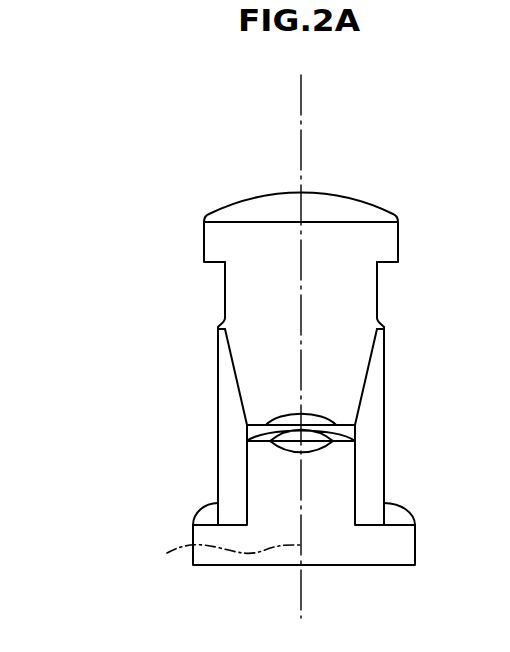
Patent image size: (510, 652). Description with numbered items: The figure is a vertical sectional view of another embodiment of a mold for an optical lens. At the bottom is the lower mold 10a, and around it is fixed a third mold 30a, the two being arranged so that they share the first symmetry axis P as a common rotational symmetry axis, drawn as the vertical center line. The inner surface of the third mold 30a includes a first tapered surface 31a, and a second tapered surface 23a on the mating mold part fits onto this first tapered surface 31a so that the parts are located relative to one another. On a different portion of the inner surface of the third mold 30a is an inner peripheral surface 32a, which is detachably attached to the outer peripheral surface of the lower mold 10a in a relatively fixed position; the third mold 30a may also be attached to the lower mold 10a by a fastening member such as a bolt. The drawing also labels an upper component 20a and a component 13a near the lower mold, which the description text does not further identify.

The lower mold 10a is at (340, 557).
The support column of base 13a is at (257, 501).
The head (push button cap) 20a is at (333, 205).
The second tapered surface 23a is at (229, 343).
The third mold 30a is at (237, 368).
The first tapered surface 31a is at (238, 384).
The inner peripheral surface 32a is at (246, 458).
The first symmetry axis P is at (219, 555).